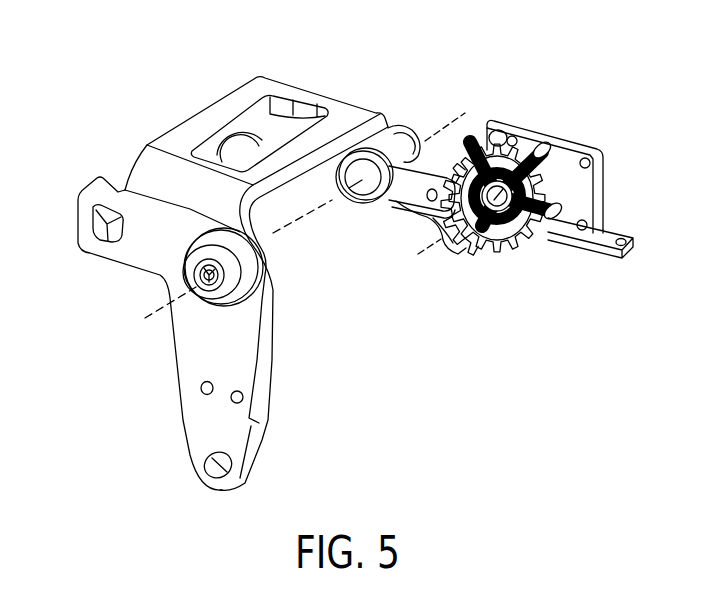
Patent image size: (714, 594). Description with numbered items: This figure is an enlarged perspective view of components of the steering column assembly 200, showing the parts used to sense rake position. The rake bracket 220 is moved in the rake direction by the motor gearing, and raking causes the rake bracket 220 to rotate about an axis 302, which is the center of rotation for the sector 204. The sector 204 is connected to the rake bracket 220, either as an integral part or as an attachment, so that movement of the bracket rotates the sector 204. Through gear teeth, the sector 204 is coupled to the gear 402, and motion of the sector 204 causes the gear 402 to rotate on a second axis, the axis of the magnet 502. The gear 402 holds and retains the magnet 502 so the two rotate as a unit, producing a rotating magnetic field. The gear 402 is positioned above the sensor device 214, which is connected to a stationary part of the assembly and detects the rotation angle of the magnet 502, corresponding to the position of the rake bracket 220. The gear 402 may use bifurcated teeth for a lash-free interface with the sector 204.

The steering column assembly 200 is at (122, 78).
The rake bracket 220 is at (338, 108).
The axis 302 is at (325, 213).
The sector 204 is at (456, 258).
The magnet 502 is at (508, 243).
The sensor device 214 is at (515, 120).
The gear 402 is at (583, 165).